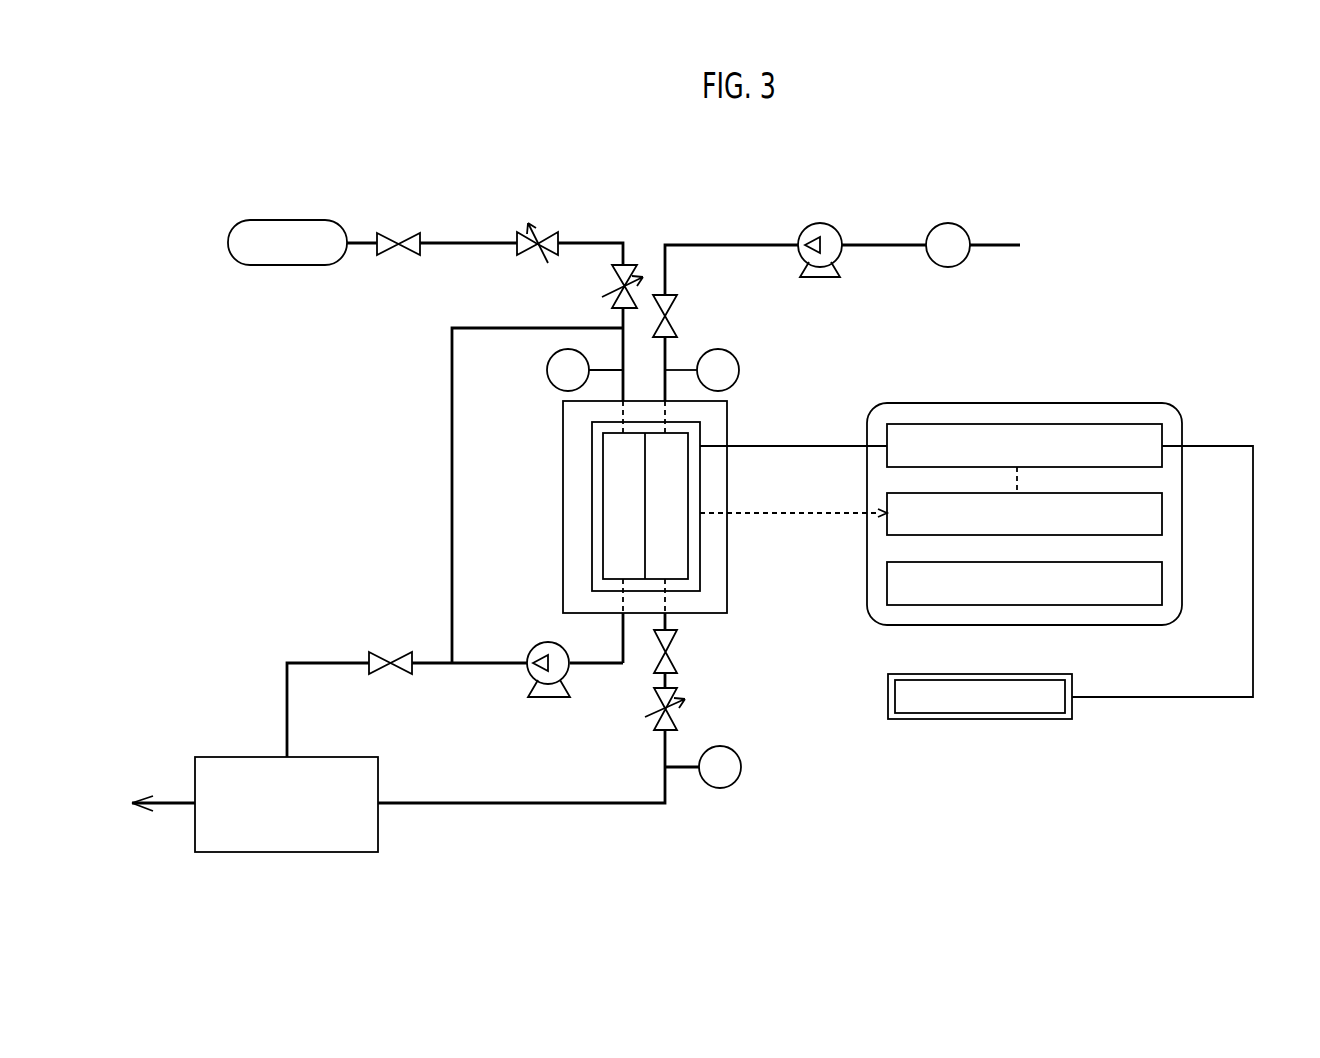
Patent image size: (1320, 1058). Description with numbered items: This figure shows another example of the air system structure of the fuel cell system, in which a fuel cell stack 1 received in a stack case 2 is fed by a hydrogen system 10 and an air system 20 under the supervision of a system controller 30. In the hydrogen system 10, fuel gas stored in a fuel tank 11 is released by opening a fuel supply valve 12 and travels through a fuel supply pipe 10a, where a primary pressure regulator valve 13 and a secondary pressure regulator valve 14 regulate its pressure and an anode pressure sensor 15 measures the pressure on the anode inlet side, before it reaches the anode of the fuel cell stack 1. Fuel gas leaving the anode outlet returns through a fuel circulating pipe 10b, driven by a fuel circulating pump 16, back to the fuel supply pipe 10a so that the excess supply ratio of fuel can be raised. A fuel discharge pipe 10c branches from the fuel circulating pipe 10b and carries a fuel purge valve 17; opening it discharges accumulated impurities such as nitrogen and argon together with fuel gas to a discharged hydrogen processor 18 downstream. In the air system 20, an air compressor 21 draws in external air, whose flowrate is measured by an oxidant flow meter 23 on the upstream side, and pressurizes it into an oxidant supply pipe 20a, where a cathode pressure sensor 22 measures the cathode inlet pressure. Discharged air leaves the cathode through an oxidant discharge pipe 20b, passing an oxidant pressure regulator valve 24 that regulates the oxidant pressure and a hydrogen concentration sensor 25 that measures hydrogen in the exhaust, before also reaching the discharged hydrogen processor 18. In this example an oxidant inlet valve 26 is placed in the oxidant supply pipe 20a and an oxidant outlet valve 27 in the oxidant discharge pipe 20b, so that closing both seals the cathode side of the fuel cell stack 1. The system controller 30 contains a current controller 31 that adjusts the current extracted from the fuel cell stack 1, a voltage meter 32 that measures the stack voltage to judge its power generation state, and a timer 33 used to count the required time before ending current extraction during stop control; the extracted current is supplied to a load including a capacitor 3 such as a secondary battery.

The fuel cell stack 1 is at (701, 537).
The stack case 2 is at (728, 597).
The capacitor 3 is at (965, 720).
The hydrogen system 10 is at (337, 357).
The fuel supply pipe 10a is at (472, 247).
The fuel circulating pipe 10b is at (450, 465).
The fuel discharge pipe 10c is at (318, 662).
The fuel tank 11 is at (284, 220).
The fuel supply valve 12 is at (407, 232).
The primary pressure regulator valve 13 is at (546, 232).
The secondary pressure regulator valve 14 is at (628, 264).
The anode pressure sensor 15 is at (547, 370).
The fuel circulating pump 16 is at (548, 643).
The fuel purge valve 17 is at (395, 654).
The discharged hydrogen processor 18 is at (235, 756).
The air system 20 is at (807, 318).
The oxidant supply pipe 20a is at (667, 268).
The oxidant discharge pipe 20b is at (663, 752).
The air compressor 21 is at (818, 223).
The cathode pressure sensor 22 is at (739, 370).
The oxidant flow meter 23 is at (945, 223).
The oxidant pressure regulator valve 24 is at (678, 714).
The hydrogen concentration sensor 25 is at (741, 767).
The oxidant inlet valve 26 is at (678, 318).
The oxidant outlet valve 27 is at (678, 654).
The system controller 30 is at (940, 403).
The current controller 31 is at (1162, 437).
The voltage meter 32 is at (1162, 513).
The timer 33 is at (1162, 585).